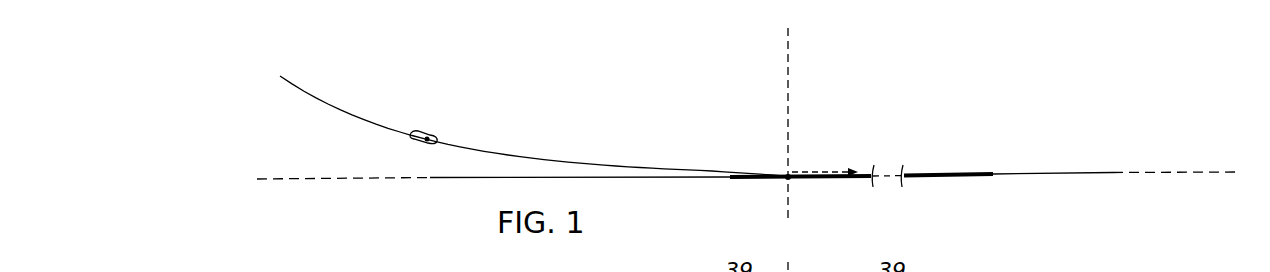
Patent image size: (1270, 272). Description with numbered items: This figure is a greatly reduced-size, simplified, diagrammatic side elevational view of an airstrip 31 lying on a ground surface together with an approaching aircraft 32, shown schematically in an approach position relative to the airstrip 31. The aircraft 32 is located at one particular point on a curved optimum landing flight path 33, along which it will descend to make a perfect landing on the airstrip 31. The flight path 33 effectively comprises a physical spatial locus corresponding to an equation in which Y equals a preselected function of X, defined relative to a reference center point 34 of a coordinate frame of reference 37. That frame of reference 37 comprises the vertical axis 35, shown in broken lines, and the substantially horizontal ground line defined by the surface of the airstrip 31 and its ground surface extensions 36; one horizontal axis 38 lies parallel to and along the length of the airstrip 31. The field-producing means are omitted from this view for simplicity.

The airstrip 31 is at (818, 188).
The aircraft 32 is at (398, 141).
The optimum landing flight path 33 is at (470, 147).
The reference center point 34 is at (787, 179).
The vertical axis 35 is at (790, 62).
The ground surface extensions 36 is at (1028, 172).
The coordinate frame of reference 37 is at (803, 137).
The axis along the length of the airstrip 38 is at (360, 180).